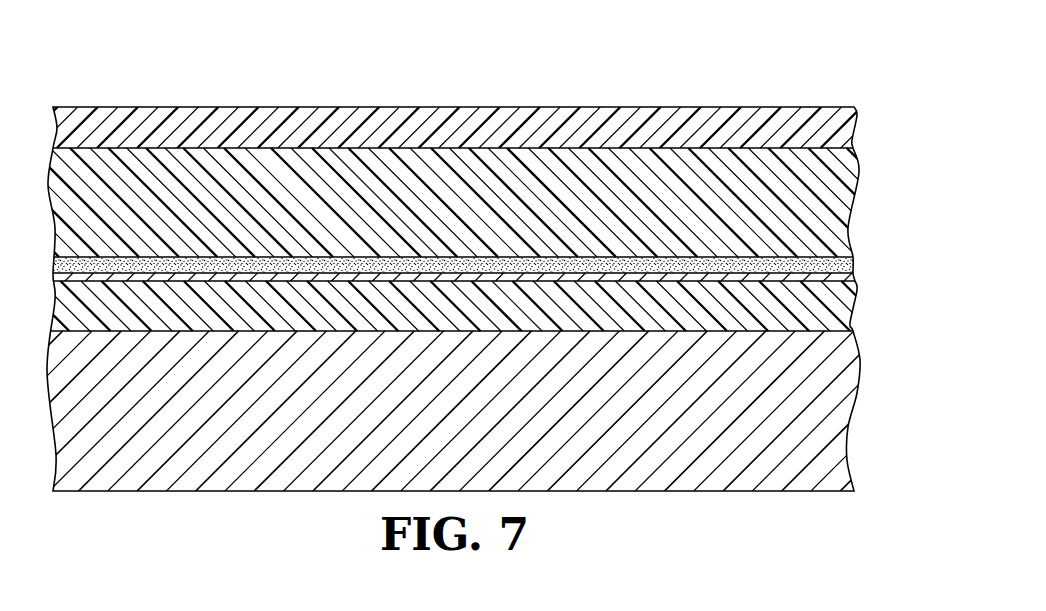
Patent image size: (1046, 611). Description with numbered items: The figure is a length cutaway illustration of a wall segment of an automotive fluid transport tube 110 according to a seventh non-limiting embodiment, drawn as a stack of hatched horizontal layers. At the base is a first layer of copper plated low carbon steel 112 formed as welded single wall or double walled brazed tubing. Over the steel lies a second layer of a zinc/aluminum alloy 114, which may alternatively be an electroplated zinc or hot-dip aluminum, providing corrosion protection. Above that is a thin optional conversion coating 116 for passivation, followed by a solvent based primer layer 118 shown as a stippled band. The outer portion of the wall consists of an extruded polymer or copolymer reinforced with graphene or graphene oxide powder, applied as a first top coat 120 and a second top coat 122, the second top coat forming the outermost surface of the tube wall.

The wall segment of an automotive fluid transport tube 110 is at (733, 70).
The first layer of copper plated low carbon steel 112 is at (861, 398).
The second layer of zinc/aluminum alloy 114 is at (857, 312).
The conversion coating 116 is at (48, 276).
The solvent based primer layer 118 is at (859, 260).
The first top coat 120 is at (860, 176).
The second top coat 122 is at (858, 117).